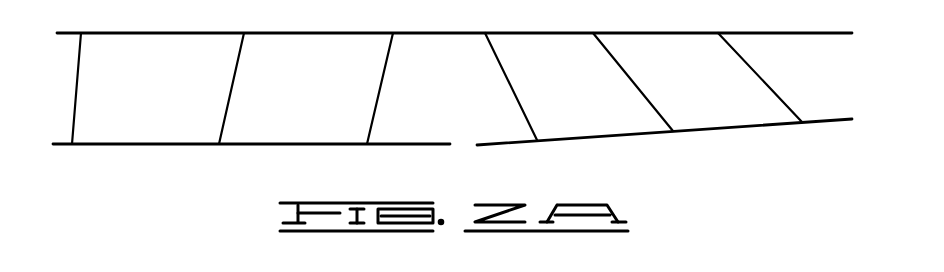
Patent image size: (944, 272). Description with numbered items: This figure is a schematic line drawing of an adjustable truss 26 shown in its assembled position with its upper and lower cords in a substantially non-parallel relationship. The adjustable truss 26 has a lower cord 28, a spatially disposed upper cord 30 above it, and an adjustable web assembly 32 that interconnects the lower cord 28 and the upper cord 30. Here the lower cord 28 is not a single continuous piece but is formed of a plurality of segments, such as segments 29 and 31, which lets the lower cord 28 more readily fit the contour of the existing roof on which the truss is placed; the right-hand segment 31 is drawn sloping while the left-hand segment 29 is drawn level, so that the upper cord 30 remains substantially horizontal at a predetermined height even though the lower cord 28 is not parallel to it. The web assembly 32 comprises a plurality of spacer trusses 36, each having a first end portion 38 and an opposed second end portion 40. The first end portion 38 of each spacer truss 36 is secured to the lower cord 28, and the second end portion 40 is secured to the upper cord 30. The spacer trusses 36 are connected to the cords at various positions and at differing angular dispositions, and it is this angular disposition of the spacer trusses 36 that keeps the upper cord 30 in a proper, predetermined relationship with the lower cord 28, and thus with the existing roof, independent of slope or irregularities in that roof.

The adjustable truss 26 is at (183, 157).
The lower cord 28 is at (272, 143).
The segment 29 is at (245, 146).
The upper cord 30 is at (395, 35).
The segment 31 is at (749, 127).
The adjustable web assembly 32 is at (77, 95).
The spacer truss 36 is at (232, 87).
The first end portion 38 is at (74, 141).
The second end portion 40 is at (82, 36).